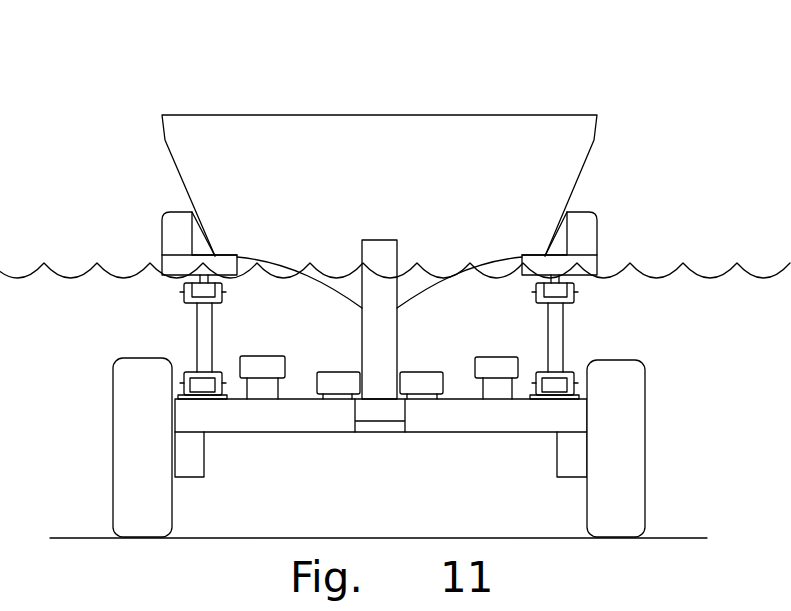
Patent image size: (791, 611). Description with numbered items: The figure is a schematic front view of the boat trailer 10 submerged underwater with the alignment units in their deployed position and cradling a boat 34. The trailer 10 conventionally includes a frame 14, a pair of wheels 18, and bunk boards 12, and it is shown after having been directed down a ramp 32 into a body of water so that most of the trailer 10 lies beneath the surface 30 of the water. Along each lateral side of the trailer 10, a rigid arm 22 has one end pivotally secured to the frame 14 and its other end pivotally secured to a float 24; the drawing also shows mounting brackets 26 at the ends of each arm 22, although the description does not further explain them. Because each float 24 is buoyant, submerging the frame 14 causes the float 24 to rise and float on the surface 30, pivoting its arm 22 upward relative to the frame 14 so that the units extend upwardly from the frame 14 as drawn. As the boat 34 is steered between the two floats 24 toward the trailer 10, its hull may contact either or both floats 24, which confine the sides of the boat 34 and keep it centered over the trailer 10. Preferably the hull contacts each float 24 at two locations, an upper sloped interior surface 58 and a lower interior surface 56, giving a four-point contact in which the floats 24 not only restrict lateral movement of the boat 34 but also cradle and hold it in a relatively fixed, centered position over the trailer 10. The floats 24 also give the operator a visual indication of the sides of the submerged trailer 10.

The boat trailer 10 is at (122, 110).
The bunk boards 12 is at (340, 372).
The frame 14 is at (450, 432).
The wheels 18 is at (113, 484).
The rigid arm 22 is at (197, 340).
The float 24 is at (162, 230).
The mounting brackets 26 is at (182, 292).
The surface of the water 30 is at (710, 275).
The ramp 32 is at (675, 537).
The boat 34 is at (533, 115).
The lower interior surface 56 is at (216, 256).
The upper sloped interior surface 58 is at (199, 223).